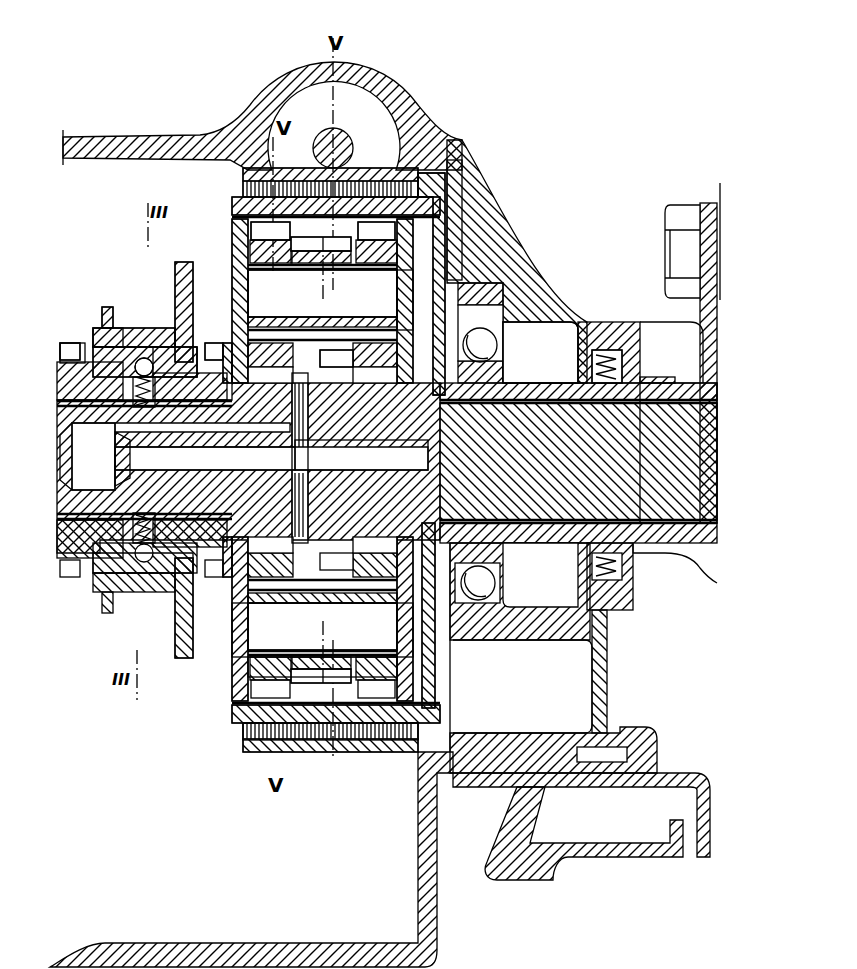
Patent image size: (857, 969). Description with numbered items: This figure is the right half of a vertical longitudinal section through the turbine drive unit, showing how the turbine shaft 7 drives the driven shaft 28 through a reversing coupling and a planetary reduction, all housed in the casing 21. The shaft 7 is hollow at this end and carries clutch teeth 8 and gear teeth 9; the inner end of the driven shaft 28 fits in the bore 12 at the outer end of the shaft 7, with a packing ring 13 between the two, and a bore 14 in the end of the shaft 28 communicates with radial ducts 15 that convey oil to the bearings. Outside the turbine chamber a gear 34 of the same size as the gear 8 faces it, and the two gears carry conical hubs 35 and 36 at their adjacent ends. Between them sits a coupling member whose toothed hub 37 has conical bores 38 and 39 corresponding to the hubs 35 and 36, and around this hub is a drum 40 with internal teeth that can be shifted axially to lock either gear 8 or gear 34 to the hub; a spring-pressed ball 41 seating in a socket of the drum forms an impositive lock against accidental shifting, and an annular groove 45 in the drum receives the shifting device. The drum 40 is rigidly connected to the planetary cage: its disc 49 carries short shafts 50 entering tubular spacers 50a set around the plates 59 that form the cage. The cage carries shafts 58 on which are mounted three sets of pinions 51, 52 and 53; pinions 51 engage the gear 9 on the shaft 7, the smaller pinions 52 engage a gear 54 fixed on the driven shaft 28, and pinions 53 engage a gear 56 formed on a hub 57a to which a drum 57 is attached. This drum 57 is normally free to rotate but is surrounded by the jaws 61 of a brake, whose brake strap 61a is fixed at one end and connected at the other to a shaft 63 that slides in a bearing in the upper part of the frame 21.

The shaft 7 is at (75, 505).
The clutch teeth 8 is at (228, 370).
The gear teeth 9 is at (270, 318).
The bore 12 is at (110, 452).
The packing ring 13 is at (118, 458).
The bore 14 is at (135, 456).
The radial ducts 15 is at (298, 445).
The casing 21 is at (125, 147).
The driven shaft 28 is at (683, 427).
The gear 34 is at (65, 343).
The conical hub 35 is at (78, 350).
The conical hub 36 is at (212, 343).
The hub 37 is at (165, 360).
The conical bore 38 is at (103, 312).
The conical bore 39 is at (178, 345).
The drum 40 is at (120, 338).
The ball 41 is at (143, 358).
The annular groove 45 is at (150, 330).
The disc 49 is at (222, 268).
The short shafts 50 is at (203, 617).
The tubular spacers 50a is at (317, 677).
The pinions 51 is at (262, 228).
The pinions 52 is at (238, 205).
The pinions 53 is at (440, 217).
The gear 54 is at (322, 330).
The gear 56 is at (418, 290).
The drum 57 is at (442, 178).
The hub 57a is at (500, 348).
The shafts 58 is at (520, 290).
The plates 59 is at (240, 250).
The jaws 61 is at (245, 188).
The brake strap 61a is at (370, 750).
The shaft 63 is at (325, 140).